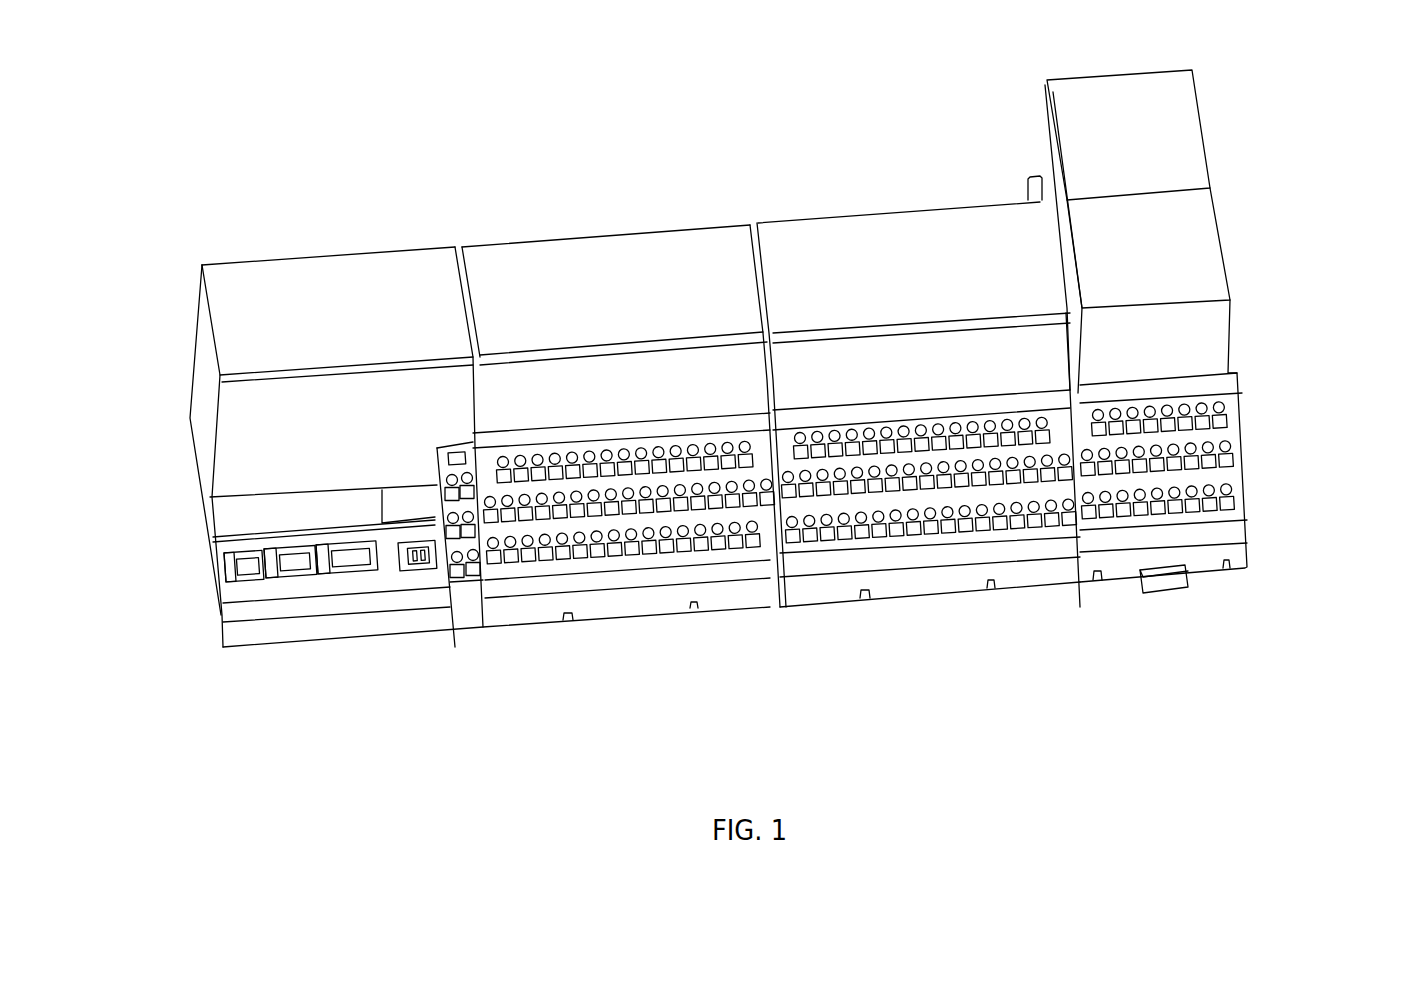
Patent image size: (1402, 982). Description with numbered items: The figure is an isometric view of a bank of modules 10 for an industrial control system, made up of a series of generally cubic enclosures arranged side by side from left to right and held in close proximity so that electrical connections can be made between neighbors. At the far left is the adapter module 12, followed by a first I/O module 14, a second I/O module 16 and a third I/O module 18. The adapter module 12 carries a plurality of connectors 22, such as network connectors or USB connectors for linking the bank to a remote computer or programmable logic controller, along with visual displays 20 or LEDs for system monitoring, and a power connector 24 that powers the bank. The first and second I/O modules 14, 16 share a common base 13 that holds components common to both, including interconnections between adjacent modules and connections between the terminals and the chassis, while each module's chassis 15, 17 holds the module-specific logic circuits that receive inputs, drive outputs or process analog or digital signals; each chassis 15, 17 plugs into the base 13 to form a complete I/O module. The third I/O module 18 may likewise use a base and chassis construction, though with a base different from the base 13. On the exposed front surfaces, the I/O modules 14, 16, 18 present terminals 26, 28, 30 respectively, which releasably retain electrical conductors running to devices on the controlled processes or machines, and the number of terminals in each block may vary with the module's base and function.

The bank of modules 10 is at (768, 90).
The adapter module 12 is at (450, 628).
The common base 13 is at (758, 600).
The first I/O module 14 is at (635, 608).
The chassis 15 is at (693, 245).
The second I/O module 16 is at (900, 585).
The chassis 17 is at (927, 227).
The third I/O module 18 is at (1167, 582).
The visual displays 20 is at (460, 452).
The connectors 22 is at (228, 578).
The power connector 24 is at (397, 560).
The terminals 26 is at (708, 560).
The terminals 28 is at (960, 532).
The terminals 30 is at (1243, 473).